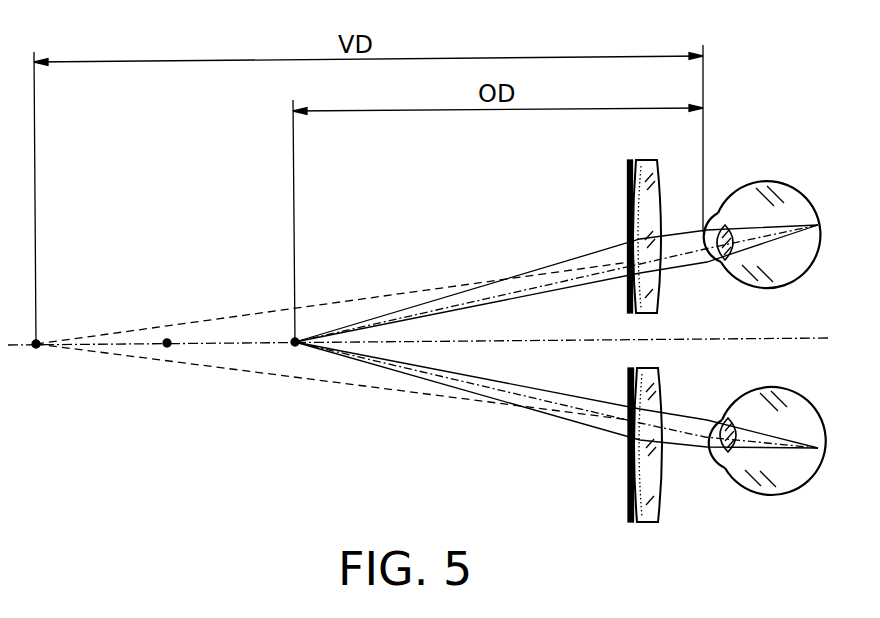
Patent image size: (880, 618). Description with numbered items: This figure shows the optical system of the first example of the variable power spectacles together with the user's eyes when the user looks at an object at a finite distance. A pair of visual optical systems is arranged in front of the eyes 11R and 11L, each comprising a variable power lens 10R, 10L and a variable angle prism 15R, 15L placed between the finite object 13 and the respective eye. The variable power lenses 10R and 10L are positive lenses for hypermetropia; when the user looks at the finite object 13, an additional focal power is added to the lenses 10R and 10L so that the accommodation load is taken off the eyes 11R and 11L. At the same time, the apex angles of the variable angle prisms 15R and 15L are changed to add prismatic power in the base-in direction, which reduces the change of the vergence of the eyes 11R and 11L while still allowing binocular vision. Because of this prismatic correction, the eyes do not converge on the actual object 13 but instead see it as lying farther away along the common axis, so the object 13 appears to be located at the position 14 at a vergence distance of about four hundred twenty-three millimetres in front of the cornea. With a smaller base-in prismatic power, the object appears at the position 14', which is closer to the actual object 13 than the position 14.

The position 14 is at (48, 369).
The position 14' is at (179, 377).
The finite object 13 is at (295, 348).
The variable power lens 10R is at (629, 188).
The variable power lens 10L is at (637, 485).
The variable angle prism 15R is at (627, 299).
The variable angle prism 15L is at (628, 382).
The eye 11R is at (782, 184).
The eye 11L is at (758, 497).